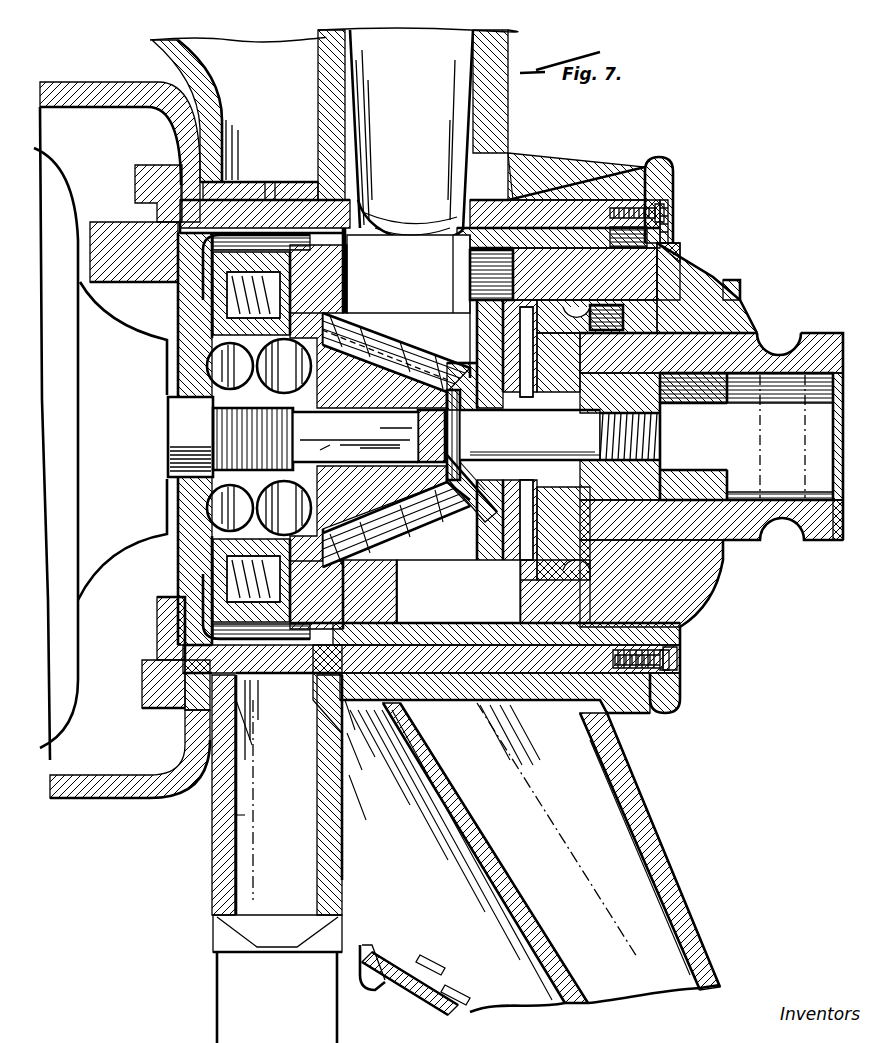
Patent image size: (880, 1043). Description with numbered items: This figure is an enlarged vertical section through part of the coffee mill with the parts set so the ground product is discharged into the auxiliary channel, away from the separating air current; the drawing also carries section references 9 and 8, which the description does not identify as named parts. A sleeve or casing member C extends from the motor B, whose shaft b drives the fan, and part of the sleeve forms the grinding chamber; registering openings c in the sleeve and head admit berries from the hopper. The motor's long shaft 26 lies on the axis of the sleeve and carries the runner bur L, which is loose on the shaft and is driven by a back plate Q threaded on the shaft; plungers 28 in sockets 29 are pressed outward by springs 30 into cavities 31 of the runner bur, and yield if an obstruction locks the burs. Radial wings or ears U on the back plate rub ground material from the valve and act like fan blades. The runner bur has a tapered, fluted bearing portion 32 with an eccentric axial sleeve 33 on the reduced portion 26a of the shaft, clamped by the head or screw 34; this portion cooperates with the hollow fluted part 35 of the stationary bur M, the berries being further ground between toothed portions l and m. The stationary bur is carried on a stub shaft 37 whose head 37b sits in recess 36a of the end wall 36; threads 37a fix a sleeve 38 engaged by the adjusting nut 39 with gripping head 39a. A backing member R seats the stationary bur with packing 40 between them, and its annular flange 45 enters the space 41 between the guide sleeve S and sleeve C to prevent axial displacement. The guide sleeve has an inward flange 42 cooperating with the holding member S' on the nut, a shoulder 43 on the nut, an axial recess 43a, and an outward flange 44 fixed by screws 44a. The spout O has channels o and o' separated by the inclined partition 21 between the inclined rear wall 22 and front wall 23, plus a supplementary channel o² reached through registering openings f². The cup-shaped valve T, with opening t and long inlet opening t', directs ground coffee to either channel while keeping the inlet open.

The intake pipe 9 is at (265, 200).
The pipe 8 is at (410, 228).
The toothed portion of the runner bur l is at (275, 212).
The cavities 31 is at (350, 265).
The long opening t' is at (412, 194).
The registering openings c is at (440, 220).
The annular longitudinal flange 45 is at (540, 235).
The sleeve or casing member C is at (592, 180).
The flange F' is at (648, 183).
The outwardly extending annular flange 44 is at (670, 180).
The backing member R is at (670, 243).
The axial recess 43a is at (668, 263).
The holding member S' is at (711, 391).
The shoulder 43 is at (672, 312).
The plungers 28 is at (240, 287).
The sockets 29 is at (230, 312).
The springs 30 is at (227, 328).
The back plate Q is at (213, 352).
The toothed portion of the stationary bur m is at (407, 299).
The shaft 26 is at (350, 345).
The runner bur L is at (370, 370).
The bearing portion 32 is at (400, 347).
The outer end wall 36 is at (460, 357).
The axial sleeve 33 is at (425, 390).
The head 34 is at (470, 380).
The wings or ears U is at (163, 477).
The head 37b is at (356, 439).
The stub shaft 37 is at (530, 435).
The threads 37a is at (658, 436).
The sleeve 38 is at (732, 460).
The shaft of the motor b is at (207, 497).
The recess 36a is at (475, 500).
The stationary bur M is at (460, 510).
The packing 40 is at (465, 525).
The reduced portion of the shaft 26a is at (365, 527).
The hollow tapered internally fluted part 35 is at (452, 490).
The annular flange 42 is at (520, 563).
The motor B is at (72, 622).
The valve T is at (173, 667).
The opening t is at (325, 744).
The adjusting nut 39 is at (748, 545).
The gripping portion or head 39a is at (806, 542).
The guide sleeve S is at (461, 606).
The space 41 is at (673, 640).
The screws 44a is at (681, 673).
The spout O is at (642, 800).
The front wall 23 is at (650, 843).
The partition 21 is at (538, 928).
The channel o' is at (650, 857).
The channel o is at (391, 981).
The rear wall 22 is at (440, 1013).